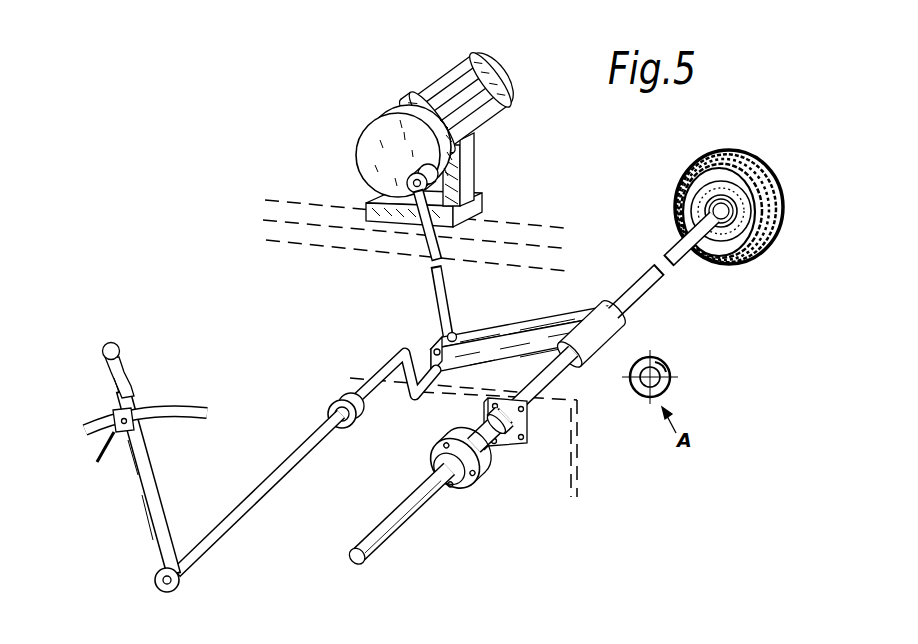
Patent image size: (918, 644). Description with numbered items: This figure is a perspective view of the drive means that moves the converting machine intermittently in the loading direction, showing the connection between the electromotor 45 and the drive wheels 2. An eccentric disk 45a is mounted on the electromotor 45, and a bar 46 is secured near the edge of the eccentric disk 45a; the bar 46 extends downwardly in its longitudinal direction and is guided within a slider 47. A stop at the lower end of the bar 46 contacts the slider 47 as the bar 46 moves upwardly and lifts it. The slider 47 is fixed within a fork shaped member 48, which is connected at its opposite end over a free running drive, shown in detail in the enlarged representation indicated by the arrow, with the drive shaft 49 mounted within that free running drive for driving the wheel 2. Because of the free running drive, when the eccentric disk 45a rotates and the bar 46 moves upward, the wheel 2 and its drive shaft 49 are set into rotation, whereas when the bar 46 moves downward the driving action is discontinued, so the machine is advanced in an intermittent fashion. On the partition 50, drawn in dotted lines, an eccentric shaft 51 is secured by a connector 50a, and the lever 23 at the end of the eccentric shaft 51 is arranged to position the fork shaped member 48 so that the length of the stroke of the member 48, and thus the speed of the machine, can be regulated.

The drive wheel 2 is at (760, 178).
The lever 23 is at (121, 366).
The electromotor 45 is at (442, 83).
The eccentric disk 45a is at (360, 146).
The bar 46 is at (434, 290).
The slider 47 is at (457, 334).
The fork shaped member 48 is at (523, 325).
The drive shaft 49 is at (673, 244).
The partition 50 is at (557, 457).
The connector 50a is at (362, 415).
The eccentric shaft 51 is at (296, 466).